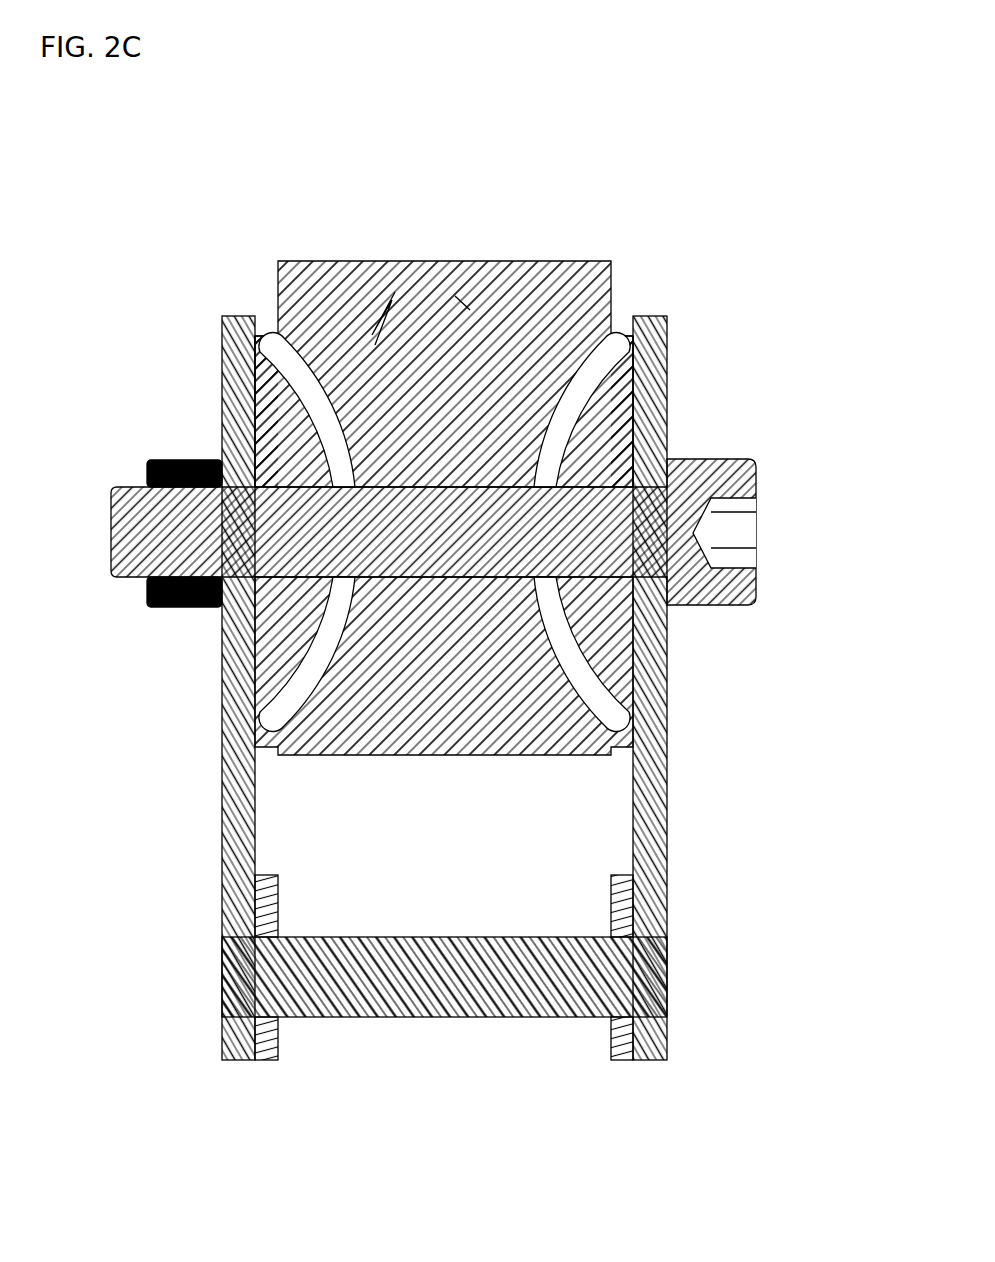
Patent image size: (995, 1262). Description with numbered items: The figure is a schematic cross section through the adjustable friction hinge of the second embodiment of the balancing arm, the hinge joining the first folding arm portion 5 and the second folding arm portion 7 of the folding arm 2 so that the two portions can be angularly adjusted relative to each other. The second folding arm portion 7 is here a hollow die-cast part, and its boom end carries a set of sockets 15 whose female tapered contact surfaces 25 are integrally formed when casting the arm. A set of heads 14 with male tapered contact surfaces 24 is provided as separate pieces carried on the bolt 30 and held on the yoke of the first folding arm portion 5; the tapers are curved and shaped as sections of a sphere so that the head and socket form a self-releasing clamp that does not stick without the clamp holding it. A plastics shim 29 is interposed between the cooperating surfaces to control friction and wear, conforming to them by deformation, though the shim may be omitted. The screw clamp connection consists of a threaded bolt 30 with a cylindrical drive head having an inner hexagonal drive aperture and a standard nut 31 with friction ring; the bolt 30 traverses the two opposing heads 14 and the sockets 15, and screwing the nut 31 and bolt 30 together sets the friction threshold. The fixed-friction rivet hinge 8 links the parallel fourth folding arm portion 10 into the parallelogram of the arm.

The folding arm 2 is at (65, 1122).
The first folding arm portion 5 is at (238, 817).
The second folding arm portion 7 is at (598, 277).
The further friction hinge 8 is at (240, 973).
The fourth folding arm portion 10 is at (265, 903).
The head 14 is at (278, 387).
The socket 15 is at (300, 350).
The male tapered contact surface 24 is at (580, 407).
The female tapered contact surface 25 is at (240, 415).
The shim 29 is at (307, 683).
The bolt 30 is at (182, 528).
The nut 31 is at (148, 603).